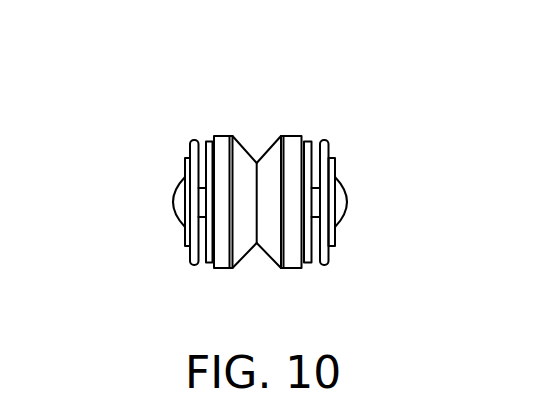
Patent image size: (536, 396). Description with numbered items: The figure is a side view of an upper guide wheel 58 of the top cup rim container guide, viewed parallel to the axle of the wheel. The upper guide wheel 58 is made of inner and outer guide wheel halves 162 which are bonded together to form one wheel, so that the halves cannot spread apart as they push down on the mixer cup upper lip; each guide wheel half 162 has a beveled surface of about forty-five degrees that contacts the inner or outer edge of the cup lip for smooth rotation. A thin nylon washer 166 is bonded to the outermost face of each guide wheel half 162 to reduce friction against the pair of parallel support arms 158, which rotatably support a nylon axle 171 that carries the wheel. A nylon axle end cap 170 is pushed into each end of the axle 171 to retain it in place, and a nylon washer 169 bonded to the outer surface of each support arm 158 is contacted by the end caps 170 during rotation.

The upper guide wheel 58 is at (284, 100).
The guide wheel half 162 is at (235, 264).
The nylon washer 166 is at (205, 142).
The parallel support arm 158 is at (190, 143).
The nylon washer 169 is at (184, 237).
The nylon axle end cap 170 is at (177, 199).
The nylon axle 171 is at (316, 192).